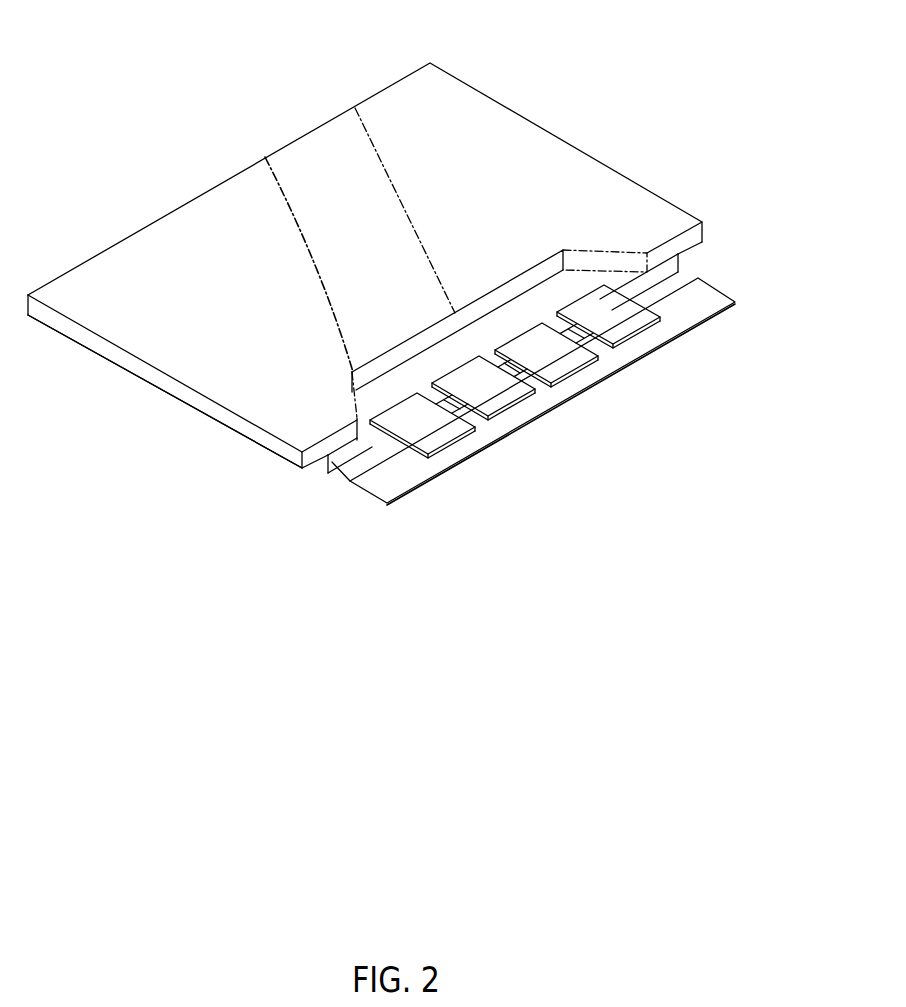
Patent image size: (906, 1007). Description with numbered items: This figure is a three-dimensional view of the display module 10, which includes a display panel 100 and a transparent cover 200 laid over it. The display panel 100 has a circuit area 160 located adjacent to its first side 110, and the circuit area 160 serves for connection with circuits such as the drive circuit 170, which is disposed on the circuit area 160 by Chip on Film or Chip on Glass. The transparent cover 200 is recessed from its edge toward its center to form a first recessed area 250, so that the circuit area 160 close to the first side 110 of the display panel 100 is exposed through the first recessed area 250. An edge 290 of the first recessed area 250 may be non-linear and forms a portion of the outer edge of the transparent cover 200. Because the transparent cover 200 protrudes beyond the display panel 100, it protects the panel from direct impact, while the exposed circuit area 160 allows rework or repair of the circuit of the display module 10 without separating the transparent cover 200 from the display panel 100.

The display module 10 is at (130, 53).
The display panel 100 is at (318, 468).
The first side 110 is at (340, 468).
The circuit area 160 is at (523, 327).
The drive circuit 170 is at (438, 433).
The transparent cover 200 is at (475, 90).
The first recessed area 250 is at (607, 375).
The edge of the recessed area 290 is at (530, 283).